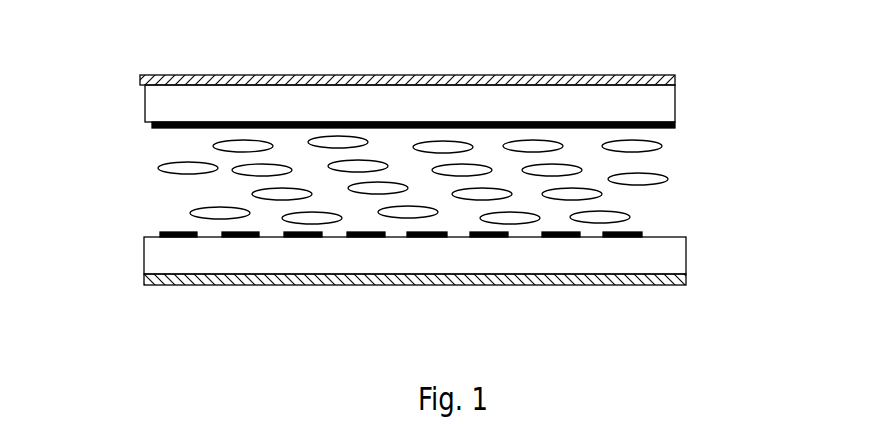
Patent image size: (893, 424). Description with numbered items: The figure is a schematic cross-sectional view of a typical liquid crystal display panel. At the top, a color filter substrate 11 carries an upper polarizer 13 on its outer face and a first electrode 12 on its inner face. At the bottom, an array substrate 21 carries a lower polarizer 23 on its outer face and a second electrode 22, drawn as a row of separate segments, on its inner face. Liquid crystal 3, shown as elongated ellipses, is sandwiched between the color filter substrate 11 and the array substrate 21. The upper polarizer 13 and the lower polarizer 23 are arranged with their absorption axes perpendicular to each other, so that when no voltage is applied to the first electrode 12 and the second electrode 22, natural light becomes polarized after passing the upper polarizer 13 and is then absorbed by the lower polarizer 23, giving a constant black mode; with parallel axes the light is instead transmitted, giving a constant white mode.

The color filter substrate 11 is at (657, 103).
The first electrode 12 is at (160, 126).
The upper polarizer 13 is at (413, 80).
The liquid crystal 3 is at (193, 175).
The array substrate 21 is at (657, 255).
The second electrode 22 is at (617, 233).
The lower polarizer 23 is at (590, 285).